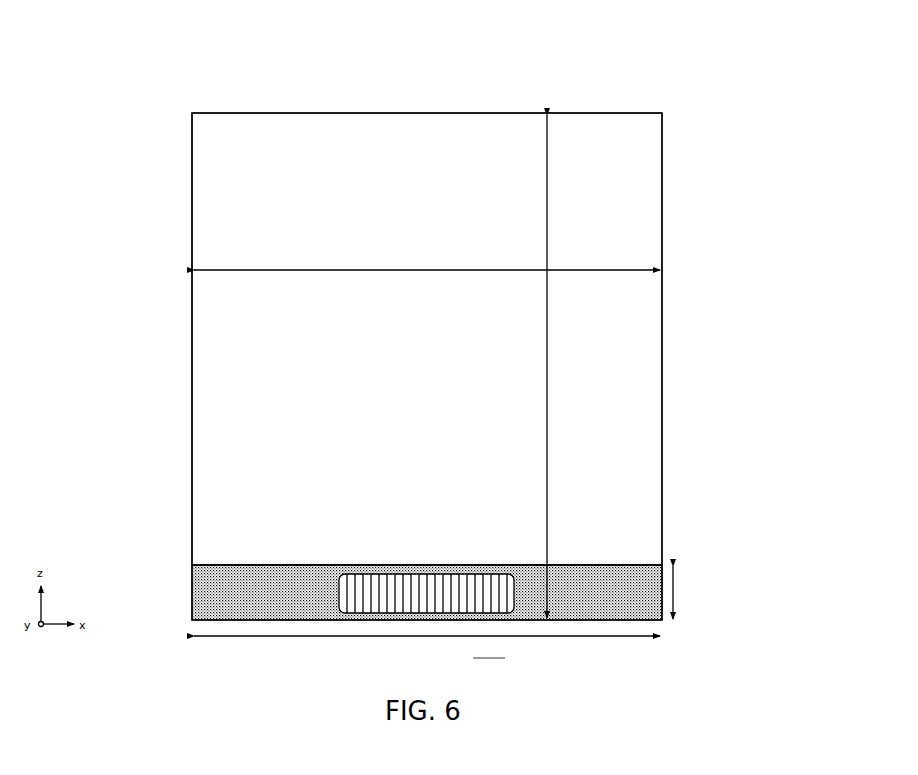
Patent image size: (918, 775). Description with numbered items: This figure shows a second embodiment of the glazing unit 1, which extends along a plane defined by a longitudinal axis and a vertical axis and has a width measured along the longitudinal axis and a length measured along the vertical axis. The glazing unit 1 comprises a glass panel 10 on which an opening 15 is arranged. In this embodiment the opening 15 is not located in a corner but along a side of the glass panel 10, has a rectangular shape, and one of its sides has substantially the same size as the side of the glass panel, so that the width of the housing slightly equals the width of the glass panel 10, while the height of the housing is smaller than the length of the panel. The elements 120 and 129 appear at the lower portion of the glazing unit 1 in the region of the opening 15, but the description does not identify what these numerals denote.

The glazing unit 1 is at (764, 113).
The glass panel 10 is at (640, 393).
The opening 15 is at (217, 563).
The heat dissipation portion 120 is at (710, 625).
The vent slot 129 is at (355, 592).